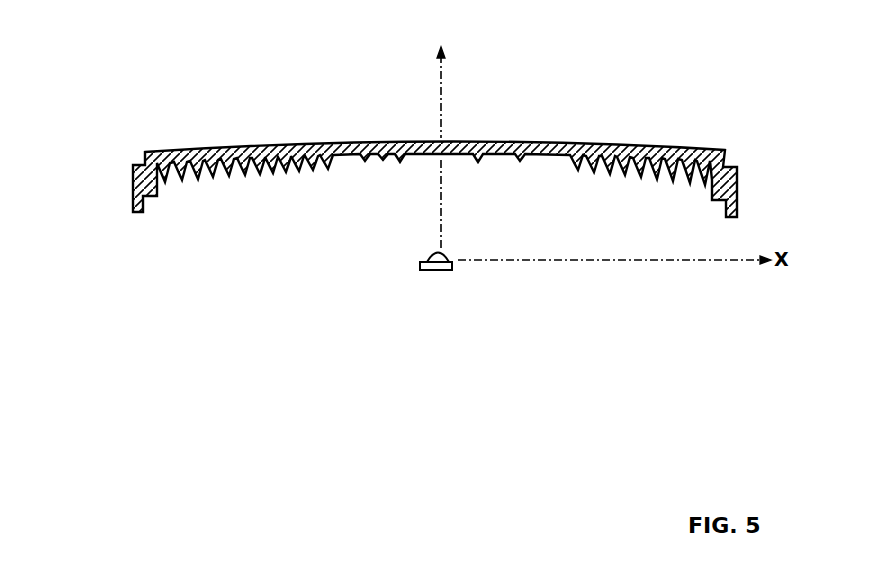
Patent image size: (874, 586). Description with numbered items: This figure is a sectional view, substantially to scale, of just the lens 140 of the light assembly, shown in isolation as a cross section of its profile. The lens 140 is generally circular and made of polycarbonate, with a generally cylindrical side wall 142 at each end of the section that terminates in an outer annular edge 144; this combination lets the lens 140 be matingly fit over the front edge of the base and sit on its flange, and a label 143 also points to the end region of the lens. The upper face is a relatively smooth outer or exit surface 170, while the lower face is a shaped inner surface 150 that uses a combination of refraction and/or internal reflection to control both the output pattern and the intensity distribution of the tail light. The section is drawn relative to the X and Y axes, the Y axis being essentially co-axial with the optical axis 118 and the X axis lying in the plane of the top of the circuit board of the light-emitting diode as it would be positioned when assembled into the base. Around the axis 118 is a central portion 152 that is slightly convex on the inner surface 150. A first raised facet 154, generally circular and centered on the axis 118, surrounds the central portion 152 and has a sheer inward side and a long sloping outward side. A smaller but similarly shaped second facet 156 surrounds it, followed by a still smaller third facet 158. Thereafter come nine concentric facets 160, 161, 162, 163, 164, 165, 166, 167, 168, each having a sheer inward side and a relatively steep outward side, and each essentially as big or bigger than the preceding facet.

The axis 118 is at (442, 127).
The lens 140 is at (742, 166).
The side wall 142 is at (135, 184).
The outer edge 143 is at (726, 190).
The outer annular edge 144 is at (136, 208).
The shaped inner surface 150 is at (527, 172).
The central portion 152 is at (473, 160).
The first raised facet 154 is at (383, 163).
The second facet 156 is at (360, 163).
The third facet 158 is at (327, 163).
The concentric facet 160 is at (297, 163).
The concentric facet 161 is at (285, 163).
The concentric facet 162 is at (272, 163).
The concentric facet 163 is at (260, 163).
The concentric facet 164 is at (245, 163).
The concentric facet 165 is at (222, 163).
The concentric facet 166 is at (203, 163).
The concentric facet 167 is at (187, 163).
The concentric facet 168 is at (167, 163).
The outer surface 170 is at (237, 143).